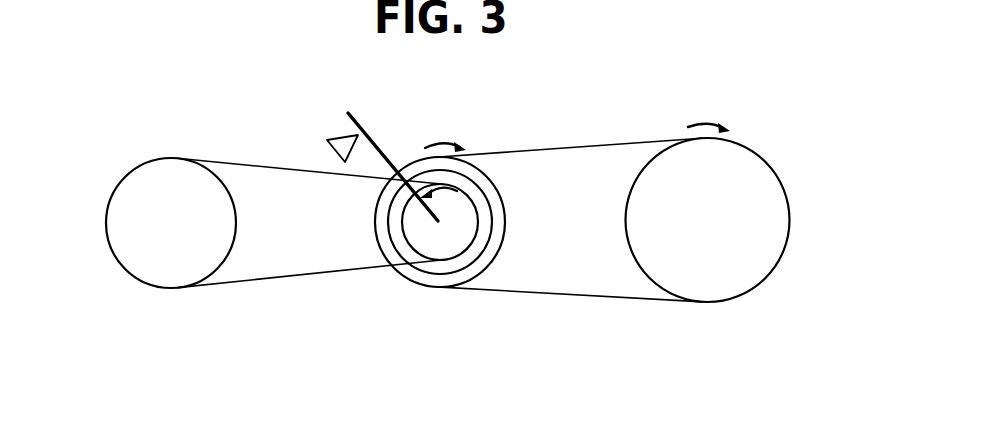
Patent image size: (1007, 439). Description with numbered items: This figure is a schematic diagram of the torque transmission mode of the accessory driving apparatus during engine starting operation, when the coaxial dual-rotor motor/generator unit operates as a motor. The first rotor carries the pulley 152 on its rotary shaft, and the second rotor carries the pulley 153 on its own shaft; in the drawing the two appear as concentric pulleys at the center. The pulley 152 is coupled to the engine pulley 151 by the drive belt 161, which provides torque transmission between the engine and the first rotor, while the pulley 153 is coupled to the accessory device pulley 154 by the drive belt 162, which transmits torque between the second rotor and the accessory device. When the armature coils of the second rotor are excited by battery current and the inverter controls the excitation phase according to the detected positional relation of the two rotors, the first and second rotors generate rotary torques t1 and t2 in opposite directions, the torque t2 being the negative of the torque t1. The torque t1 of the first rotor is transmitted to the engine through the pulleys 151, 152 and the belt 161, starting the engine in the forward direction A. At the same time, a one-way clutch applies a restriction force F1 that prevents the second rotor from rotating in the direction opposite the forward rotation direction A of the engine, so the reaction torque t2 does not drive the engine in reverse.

The pulley 154 is at (118, 183).
The drive belt 162 is at (237, 162).
The pulley 153 is at (422, 242).
The pulley 152 is at (432, 281).
The drive belt 161 is at (610, 140).
The pulley 151 is at (782, 180).
The restriction force F1 is at (361, 146).
The rotary torque t1 is at (443, 141).
The rotary torque t2 is at (443, 185).
The forward direction A is at (697, 123).